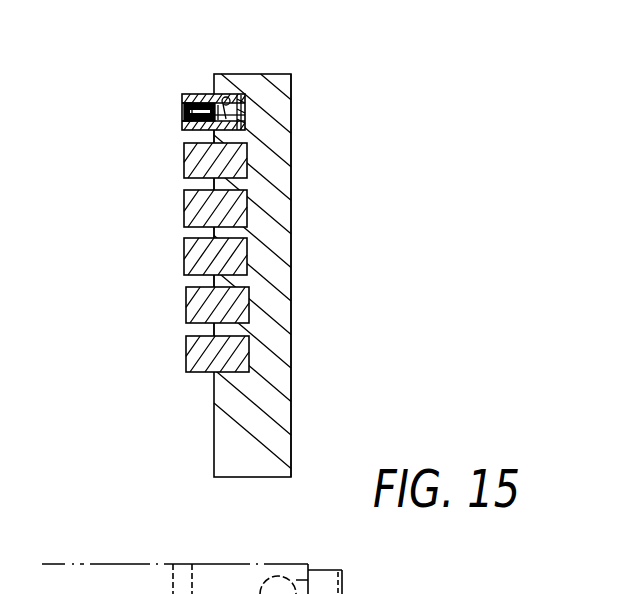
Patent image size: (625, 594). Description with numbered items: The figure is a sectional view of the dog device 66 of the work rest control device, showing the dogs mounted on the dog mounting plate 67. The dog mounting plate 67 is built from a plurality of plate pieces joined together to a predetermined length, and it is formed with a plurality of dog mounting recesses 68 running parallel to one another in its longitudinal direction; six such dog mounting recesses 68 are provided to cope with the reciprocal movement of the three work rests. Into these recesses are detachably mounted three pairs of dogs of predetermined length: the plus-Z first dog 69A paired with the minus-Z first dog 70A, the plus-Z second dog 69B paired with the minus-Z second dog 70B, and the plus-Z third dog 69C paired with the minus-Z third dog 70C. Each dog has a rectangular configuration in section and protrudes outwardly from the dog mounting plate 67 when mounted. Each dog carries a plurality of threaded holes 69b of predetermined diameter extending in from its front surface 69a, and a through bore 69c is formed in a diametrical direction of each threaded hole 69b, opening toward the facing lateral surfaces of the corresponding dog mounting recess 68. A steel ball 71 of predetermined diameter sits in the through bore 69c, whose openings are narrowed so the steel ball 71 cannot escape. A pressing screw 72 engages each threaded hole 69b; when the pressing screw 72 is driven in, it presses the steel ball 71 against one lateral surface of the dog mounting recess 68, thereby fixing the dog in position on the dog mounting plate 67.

The dog device 66 is at (308, 255).
The dog mounting plate 67 is at (275, 85).
The dog mounting recess 68 is at (247, 103).
The +Z No. 1 dog 69A is at (183, 208).
The +Z No. 2 dog 69B is at (183, 157).
The +Z No. 3 dog 69C is at (182, 127).
The front surface 69a is at (183, 101).
The threaded hole 69b is at (203, 100).
The through bore 69c is at (247, 127).
The −Z No. 1 dog 70A is at (186, 345).
The −Z No. 2 dog 70B is at (186, 305).
The −Z No. 3 dog 70C is at (183, 256).
The steel ball 71 is at (240, 93).
The pressing screw 72 is at (187, 108).